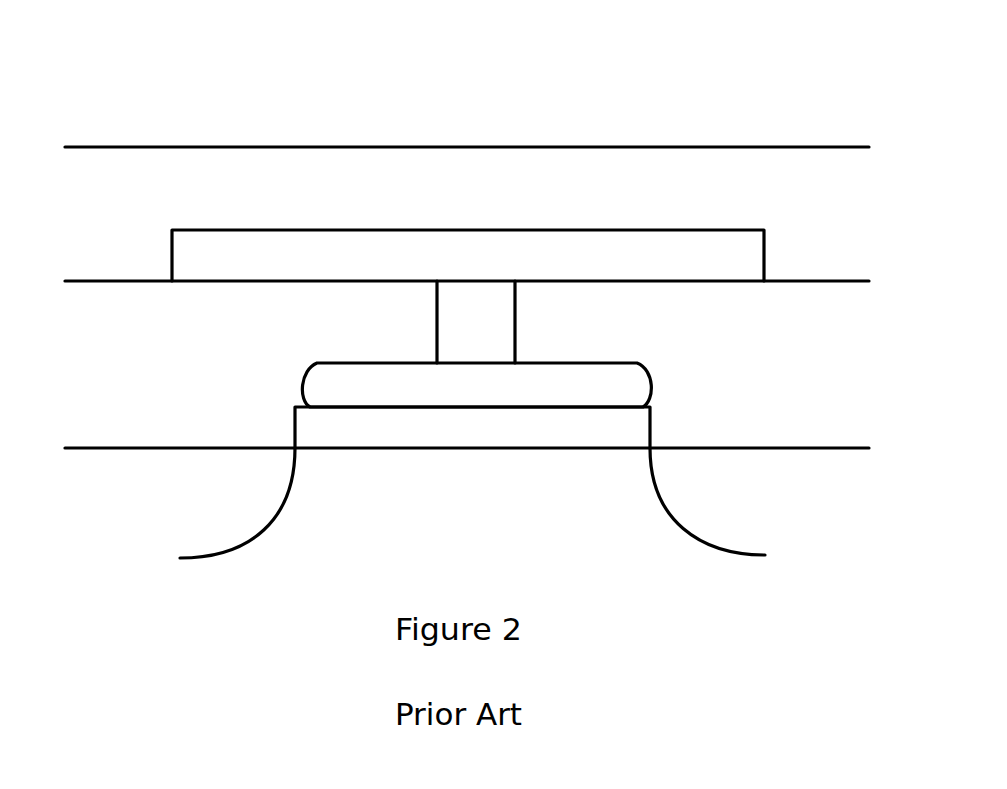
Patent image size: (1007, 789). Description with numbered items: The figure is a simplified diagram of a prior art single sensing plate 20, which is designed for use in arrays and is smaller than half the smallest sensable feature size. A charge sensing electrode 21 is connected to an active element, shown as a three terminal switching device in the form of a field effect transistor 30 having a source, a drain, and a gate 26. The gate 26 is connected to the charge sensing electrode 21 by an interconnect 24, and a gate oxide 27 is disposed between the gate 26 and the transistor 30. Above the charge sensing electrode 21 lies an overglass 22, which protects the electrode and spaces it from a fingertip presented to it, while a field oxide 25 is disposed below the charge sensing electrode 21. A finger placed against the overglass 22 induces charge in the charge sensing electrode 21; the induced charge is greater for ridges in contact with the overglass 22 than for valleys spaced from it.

The single sensing plate 20 is at (782, 127).
The charge sensing electrode 21 is at (392, 258).
The overglass 22 is at (185, 185).
The interconnect 24 is at (465, 345).
The field oxide 25 is at (117, 313).
The gate 26 is at (342, 387).
The gate oxide 27 is at (317, 435).
The transistor 30 is at (290, 548).